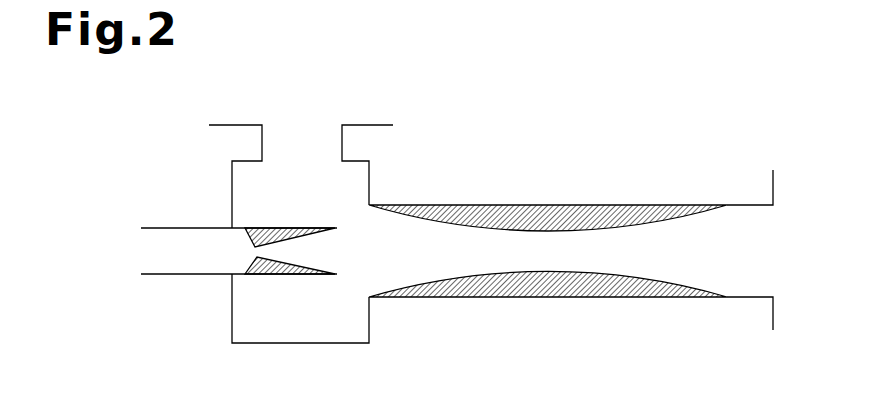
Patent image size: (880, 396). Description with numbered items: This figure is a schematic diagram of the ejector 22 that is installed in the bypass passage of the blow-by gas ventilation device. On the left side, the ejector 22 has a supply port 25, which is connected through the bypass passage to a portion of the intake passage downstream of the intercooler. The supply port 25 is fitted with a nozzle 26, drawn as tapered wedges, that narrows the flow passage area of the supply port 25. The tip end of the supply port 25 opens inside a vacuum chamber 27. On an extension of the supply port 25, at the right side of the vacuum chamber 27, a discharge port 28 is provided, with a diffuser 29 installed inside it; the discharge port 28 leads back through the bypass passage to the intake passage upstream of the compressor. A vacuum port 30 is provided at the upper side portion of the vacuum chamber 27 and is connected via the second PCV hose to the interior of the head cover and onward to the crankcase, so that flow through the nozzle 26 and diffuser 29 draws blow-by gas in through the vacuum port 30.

The ejector 22 is at (568, 108).
The supply port 25 is at (180, 275).
The nozzle 26 is at (280, 275).
The vacuum chamber 27 is at (310, 344).
The discharge port 28 is at (757, 298).
The diffuser 29 is at (565, 272).
The vacuum port 30 is at (345, 144).